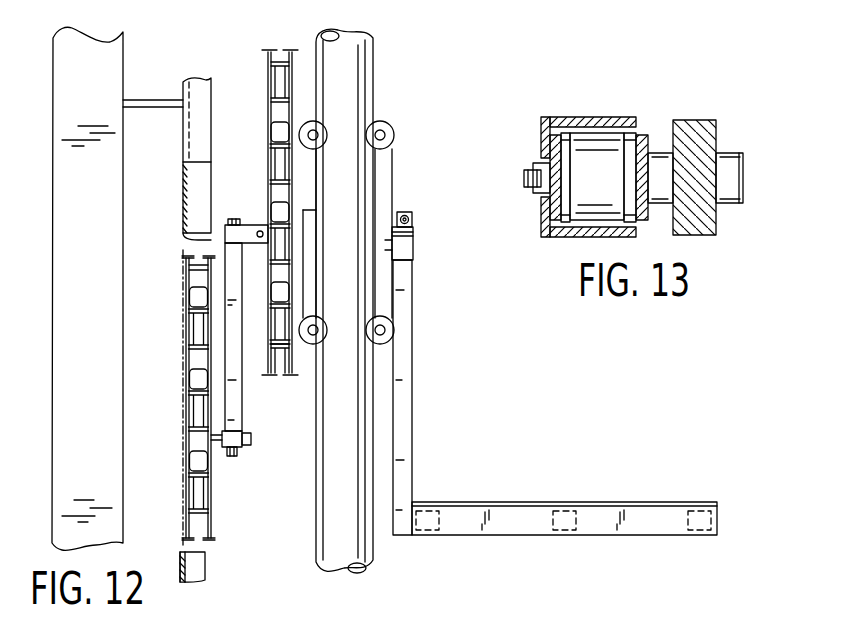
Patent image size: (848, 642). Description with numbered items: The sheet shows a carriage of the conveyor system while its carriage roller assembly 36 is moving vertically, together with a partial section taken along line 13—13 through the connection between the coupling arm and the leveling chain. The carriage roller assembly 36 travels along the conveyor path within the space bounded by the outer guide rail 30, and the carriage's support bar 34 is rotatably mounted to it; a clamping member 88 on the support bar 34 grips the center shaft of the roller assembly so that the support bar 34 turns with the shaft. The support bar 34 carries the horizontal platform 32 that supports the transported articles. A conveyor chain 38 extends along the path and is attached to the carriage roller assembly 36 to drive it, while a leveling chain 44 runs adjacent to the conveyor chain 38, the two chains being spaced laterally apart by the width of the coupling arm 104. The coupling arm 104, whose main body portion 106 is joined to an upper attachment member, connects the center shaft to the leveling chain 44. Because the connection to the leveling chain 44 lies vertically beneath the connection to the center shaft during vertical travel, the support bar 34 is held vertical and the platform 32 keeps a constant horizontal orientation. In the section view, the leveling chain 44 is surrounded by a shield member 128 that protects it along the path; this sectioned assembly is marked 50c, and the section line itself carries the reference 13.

In FIG. 12, the outer guide rail 30 is at (350, 82).
In FIG. 12, the horizontal platform 32 is at (497, 500).
In FIG. 12, the support bar 34 is at (406, 422).
In FIG. 12, the carriage roller assembly 36 is at (420, 173).
In FIG. 12, the conveyor chain 38 is at (268, 63).
In FIG. 12, the leveling chain 44 is at (206, 522).
In FIG. 13, the leveling chain 44 is at (641, 135).
In FIG. 12, the clamping member 88 is at (406, 245).
In FIG. 12, the coupling arm 104 is at (231, 202).
In FIG. 13, the main body portion 106 is at (694, 130).
In FIG. 13, the shield member 128 is at (600, 117).
In FIG. 13, the roller assembly 50c is at (633, 118).
In FIG. 12, the section line 13- 13 is at (182, 393).